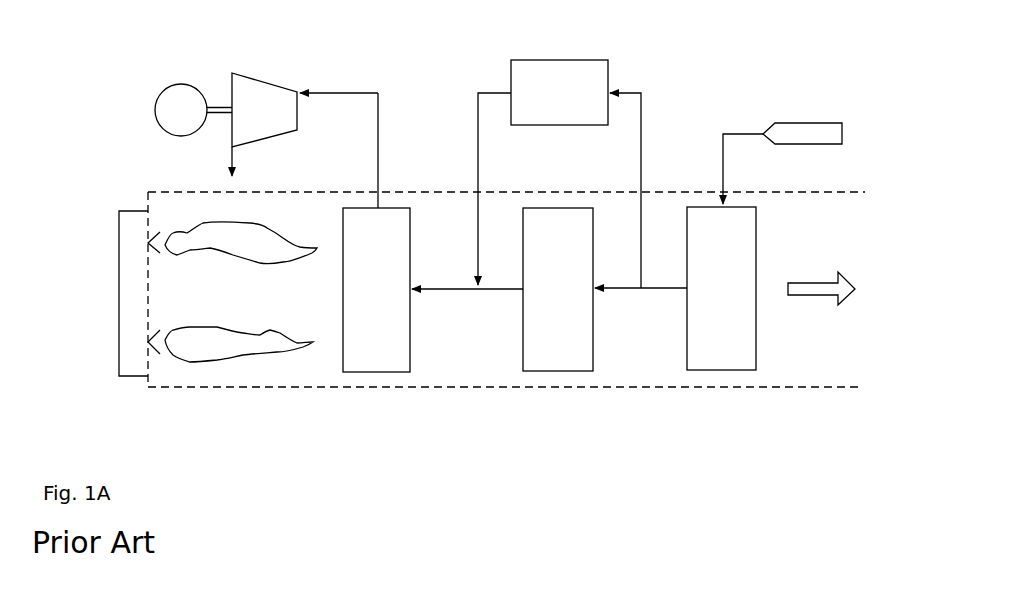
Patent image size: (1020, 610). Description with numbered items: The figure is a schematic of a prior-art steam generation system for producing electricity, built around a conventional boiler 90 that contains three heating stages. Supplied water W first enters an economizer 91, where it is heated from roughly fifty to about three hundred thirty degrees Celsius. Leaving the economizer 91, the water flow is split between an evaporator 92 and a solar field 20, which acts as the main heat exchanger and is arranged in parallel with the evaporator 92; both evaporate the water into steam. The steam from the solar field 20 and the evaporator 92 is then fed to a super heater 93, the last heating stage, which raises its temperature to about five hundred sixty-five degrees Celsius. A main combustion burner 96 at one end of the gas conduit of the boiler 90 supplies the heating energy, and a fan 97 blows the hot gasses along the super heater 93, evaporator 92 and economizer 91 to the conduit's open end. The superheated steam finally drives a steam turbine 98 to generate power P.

The conventional boiler 90 is at (708, 387).
The economizer 91 is at (725, 231).
The evaporator 92 is at (502, 289).
The super heater 93 is at (376, 290).
The main combustion burner 96 is at (158, 245).
The fan 97 is at (133, 323).
The steam turbine 98 is at (262, 103).
The solar field 20 is at (543, 172).